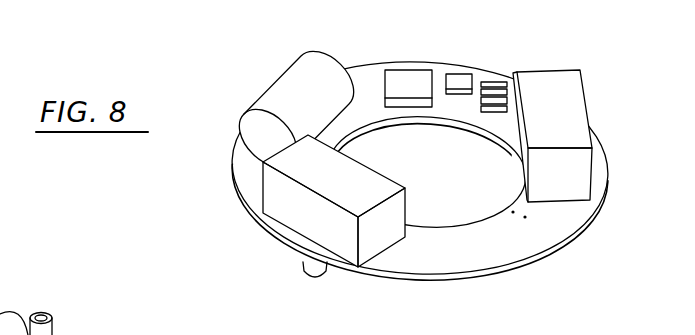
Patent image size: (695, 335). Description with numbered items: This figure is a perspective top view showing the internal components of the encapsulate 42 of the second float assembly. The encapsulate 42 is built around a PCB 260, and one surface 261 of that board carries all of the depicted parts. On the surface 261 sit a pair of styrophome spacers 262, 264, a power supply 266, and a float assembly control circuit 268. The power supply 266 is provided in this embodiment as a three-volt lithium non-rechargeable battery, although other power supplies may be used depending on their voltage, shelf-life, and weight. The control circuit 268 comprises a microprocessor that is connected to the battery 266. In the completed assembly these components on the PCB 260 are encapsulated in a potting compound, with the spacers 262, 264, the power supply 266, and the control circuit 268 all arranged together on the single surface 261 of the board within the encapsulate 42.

The encapsulate 42 is at (223, 188).
The PCB 260 is at (517, 252).
The surface 261 is at (491, 252).
The styrophome spacer 262 is at (350, 248).
The styrophome spacer 264 is at (557, 78).
The power supply 266 is at (295, 60).
The float assembly control circuit 268 is at (441, 56).